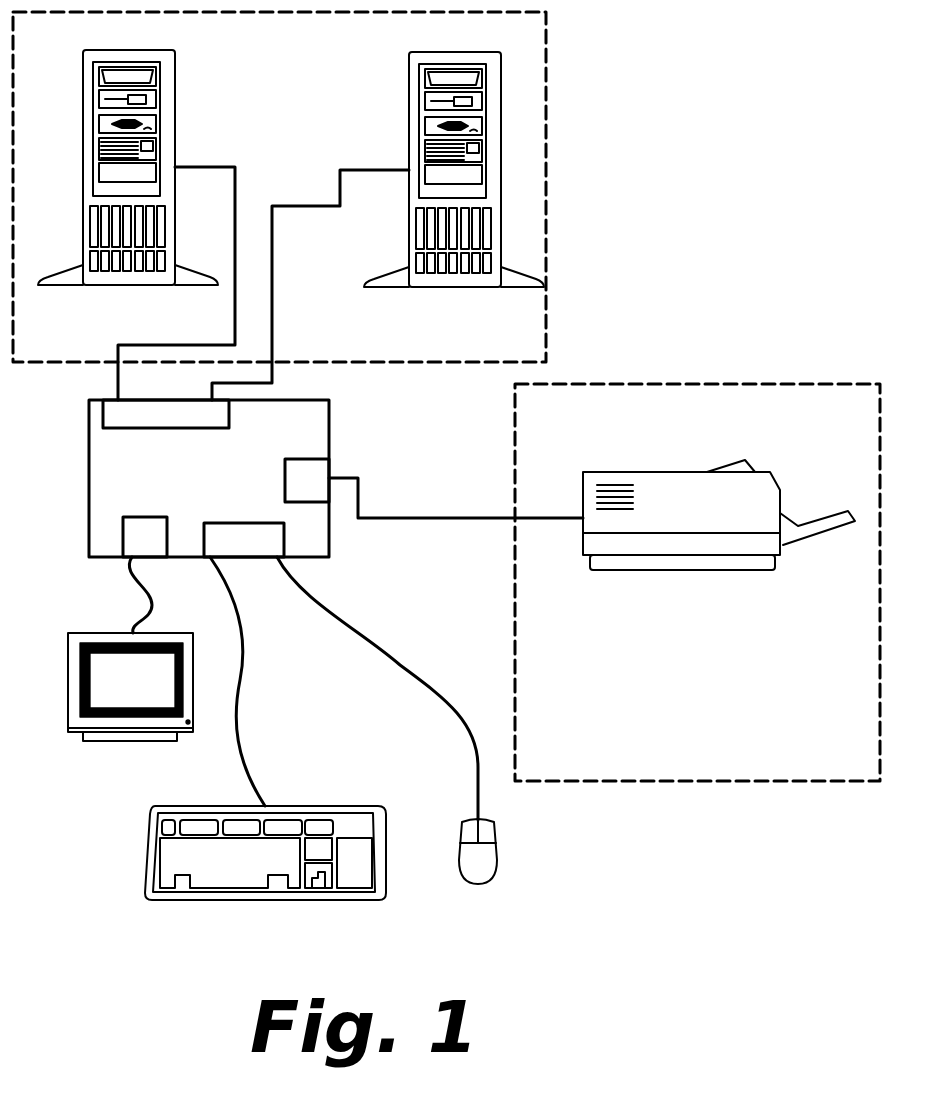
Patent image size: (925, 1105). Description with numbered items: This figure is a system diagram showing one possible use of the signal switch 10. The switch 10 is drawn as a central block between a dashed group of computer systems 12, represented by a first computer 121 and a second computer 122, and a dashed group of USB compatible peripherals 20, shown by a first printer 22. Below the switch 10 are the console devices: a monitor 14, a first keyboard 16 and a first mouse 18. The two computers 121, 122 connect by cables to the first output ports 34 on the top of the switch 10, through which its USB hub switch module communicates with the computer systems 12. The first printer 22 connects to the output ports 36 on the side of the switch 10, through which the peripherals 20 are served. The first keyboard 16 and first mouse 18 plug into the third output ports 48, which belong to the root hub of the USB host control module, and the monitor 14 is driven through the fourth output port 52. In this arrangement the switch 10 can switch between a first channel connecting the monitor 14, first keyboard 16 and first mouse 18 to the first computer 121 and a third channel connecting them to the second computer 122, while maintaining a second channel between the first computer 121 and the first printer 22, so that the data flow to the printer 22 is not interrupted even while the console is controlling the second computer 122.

The signal switch 10 is at (228, 495).
The computer systems 12 is at (300, 105).
The first computer 121 is at (150, 323).
The second computer 122 is at (476, 325).
The monitor 14 is at (148, 778).
The first keyboard 16 is at (284, 938).
The first mouse 18 is at (495, 920).
The USB compatible peripherals 20 is at (699, 729).
The first printer 22 is at (698, 608).
The first output ports 34 is at (180, 427).
The output ports 36 is at (320, 493).
The third output ports 48 is at (258, 552).
The fourth output port 52 is at (160, 550).